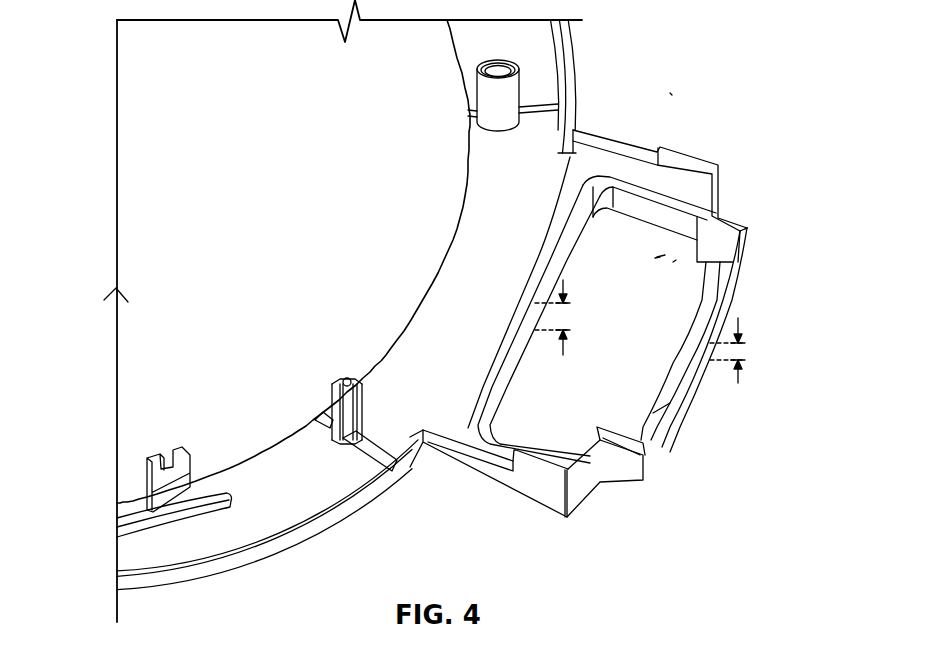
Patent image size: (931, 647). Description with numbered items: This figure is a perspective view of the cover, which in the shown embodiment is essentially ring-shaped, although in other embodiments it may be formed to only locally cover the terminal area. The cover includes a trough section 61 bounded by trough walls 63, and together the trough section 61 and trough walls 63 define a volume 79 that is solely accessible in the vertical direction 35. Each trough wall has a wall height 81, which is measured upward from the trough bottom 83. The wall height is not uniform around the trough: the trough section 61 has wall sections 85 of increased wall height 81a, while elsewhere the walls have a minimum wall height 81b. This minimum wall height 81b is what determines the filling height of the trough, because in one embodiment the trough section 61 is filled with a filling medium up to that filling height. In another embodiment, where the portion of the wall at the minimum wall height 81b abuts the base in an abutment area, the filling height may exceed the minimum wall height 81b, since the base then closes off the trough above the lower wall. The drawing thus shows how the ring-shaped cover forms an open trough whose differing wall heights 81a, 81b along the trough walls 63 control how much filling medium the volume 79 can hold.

The vertical direction 35 is at (670, 93).
The trough section 61 is at (657, 257).
The volume 79 is at (658, 254).
The trough walls 63 is at (617, 180).
The wall height 81 is at (563, 350).
The trough bottom 83 is at (673, 262).
The wall sections 85 is at (750, 218).
The increased wall height 81a is at (752, 218).
The minimum wall height 81b is at (738, 383).